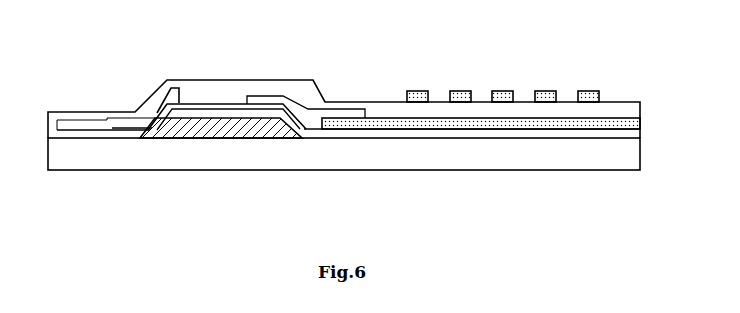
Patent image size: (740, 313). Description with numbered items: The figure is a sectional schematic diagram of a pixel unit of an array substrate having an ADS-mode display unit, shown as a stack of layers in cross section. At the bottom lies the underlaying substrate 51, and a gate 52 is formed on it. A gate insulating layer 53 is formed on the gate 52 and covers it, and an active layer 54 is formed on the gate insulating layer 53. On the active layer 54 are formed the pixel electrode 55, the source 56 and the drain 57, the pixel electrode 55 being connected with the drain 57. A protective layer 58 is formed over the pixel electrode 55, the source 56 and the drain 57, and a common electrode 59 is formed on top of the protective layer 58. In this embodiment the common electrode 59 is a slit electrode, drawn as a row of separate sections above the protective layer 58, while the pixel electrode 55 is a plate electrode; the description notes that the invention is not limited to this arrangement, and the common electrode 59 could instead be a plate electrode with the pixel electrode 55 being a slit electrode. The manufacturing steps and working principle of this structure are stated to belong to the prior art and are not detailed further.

The underlaying substrate 51 is at (265, 152).
The gate 52 is at (197, 133).
The gate insulating layer 53 is at (387, 133).
The active layer 54 is at (300, 120).
The pixel electrode 55 is at (448, 122).
The source 56 is at (177, 102).
The drain 57 is at (282, 97).
The protective layer 58 is at (432, 108).
The common electrode 59 is at (500, 91).